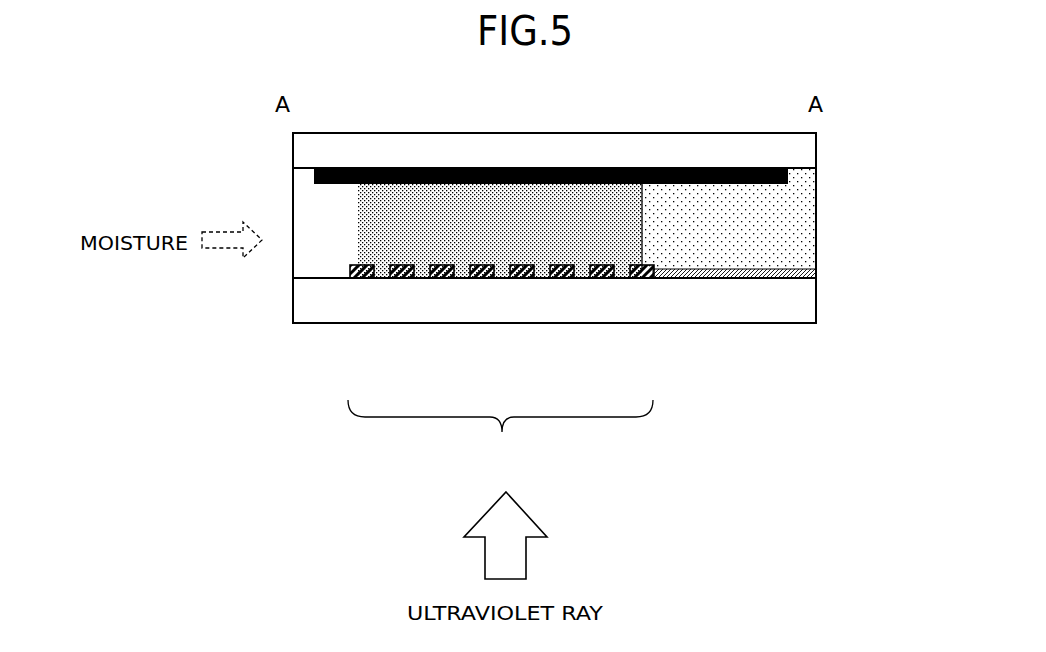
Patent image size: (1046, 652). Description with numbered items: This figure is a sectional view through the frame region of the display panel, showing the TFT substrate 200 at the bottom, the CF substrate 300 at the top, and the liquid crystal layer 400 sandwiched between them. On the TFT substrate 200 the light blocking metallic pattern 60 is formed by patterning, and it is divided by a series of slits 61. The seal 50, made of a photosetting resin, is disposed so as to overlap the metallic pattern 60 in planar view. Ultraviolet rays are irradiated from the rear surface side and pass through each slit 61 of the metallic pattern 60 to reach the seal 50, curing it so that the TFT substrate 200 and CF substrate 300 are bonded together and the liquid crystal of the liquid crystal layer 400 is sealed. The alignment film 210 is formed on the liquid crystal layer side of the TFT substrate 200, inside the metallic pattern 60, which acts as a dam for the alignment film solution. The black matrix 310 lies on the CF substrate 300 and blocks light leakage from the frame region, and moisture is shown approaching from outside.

The seal 50 is at (372, 217).
The metallic pattern 60 is at (500, 436).
The slit 61 is at (423, 283).
The TFT substrate 200 is at (808, 305).
The alignment film 210 is at (816, 273).
The CF substrate 300 is at (808, 153).
The black matrix 310 is at (788, 177).
The liquid crystal layer 400 is at (808, 238).